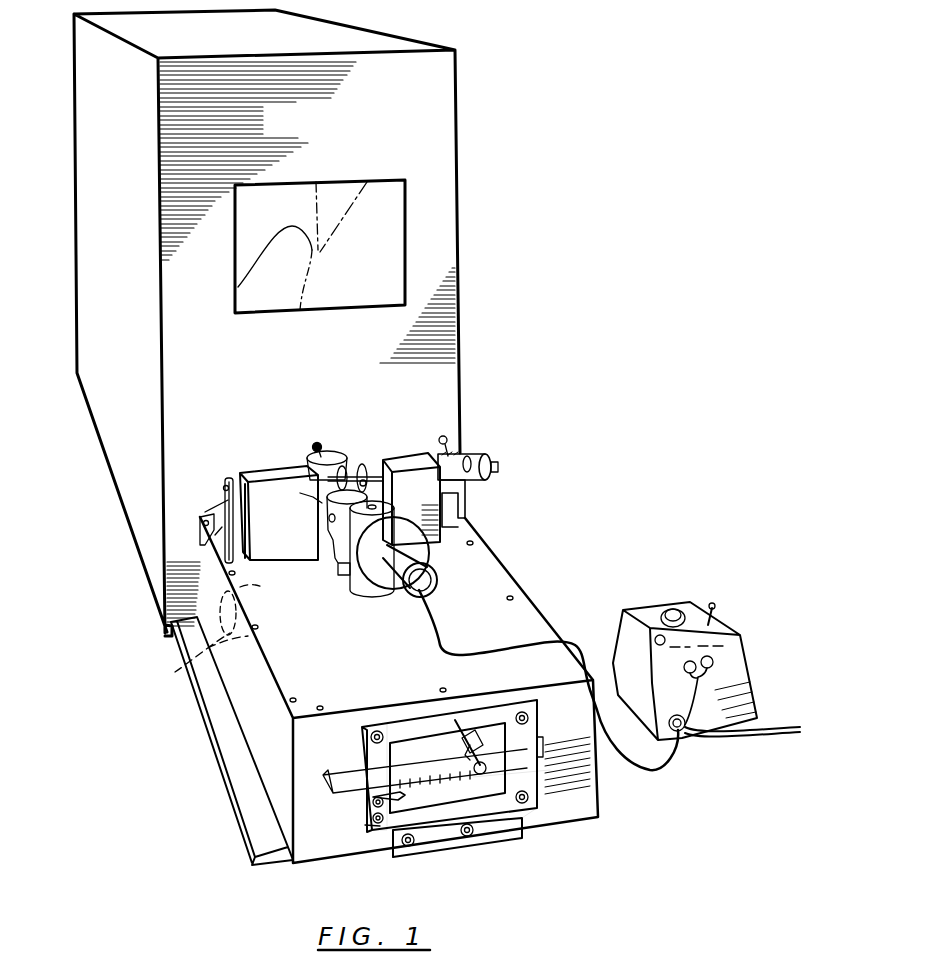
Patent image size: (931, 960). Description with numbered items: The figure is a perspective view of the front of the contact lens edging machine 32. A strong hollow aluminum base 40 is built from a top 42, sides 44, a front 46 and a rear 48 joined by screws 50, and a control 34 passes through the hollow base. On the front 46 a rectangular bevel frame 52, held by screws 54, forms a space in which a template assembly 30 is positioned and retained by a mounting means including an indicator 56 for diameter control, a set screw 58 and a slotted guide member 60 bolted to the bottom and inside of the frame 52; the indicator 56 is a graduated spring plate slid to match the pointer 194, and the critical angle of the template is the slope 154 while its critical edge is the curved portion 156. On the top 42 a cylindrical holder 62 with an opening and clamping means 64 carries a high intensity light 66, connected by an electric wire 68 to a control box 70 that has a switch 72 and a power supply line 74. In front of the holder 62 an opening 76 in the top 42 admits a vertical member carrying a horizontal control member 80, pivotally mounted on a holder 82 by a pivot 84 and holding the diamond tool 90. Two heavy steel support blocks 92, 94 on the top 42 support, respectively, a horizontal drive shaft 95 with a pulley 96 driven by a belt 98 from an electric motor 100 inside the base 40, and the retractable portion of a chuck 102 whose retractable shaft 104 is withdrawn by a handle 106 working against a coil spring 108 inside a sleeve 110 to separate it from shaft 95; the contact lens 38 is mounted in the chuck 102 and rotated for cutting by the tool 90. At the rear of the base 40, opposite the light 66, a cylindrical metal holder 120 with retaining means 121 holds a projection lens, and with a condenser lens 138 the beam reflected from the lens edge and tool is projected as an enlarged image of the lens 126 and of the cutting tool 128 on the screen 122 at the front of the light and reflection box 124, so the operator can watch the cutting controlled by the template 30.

The template assembly 30 is at (328, 795).
The machine 32 is at (287, 678).
The control 34 is at (473, 777).
The contact lens 38 is at (355, 468).
The base 40 is at (488, 560).
The top 42 is at (333, 645).
The sides 44 is at (264, 684).
The front 46 is at (337, 750).
The rear 48 is at (206, 521).
The screws 50 is at (258, 625).
The bevel frame 52 is at (541, 728).
The screws 54 is at (379, 731).
The indicator 56 is at (398, 776).
The set screw 58 is at (410, 856).
The slotted guide member 60 is at (522, 826).
The cylindrical holder 62 is at (411, 499).
The clamping means 64 is at (337, 548).
The high intensity light 66 is at (465, 523).
The electric wire 68 is at (432, 615).
The control box 70 is at (725, 665).
The switch 72 is at (713, 608).
The power supply line 74 is at (733, 742).
The opening 76 is at (362, 575).
The horizontal control member 80 is at (336, 528).
The holder 82 is at (299, 491).
The pivot 84 is at (328, 514).
The diamond tool 90 is at (365, 480).
The support block 92 is at (257, 477).
The support block 94 is at (467, 456).
The horizontal drive shaft 95 is at (228, 477).
The pulley 96 is at (205, 512).
The belt 98 is at (223, 527).
The electric motor 100 is at (178, 672).
The chuck 102 is at (494, 457).
The retractable shaft 104 is at (498, 467).
The handle 106 is at (447, 442).
The coil spring 108 is at (490, 453).
The sleeve 110 is at (470, 480).
The cylindrical metal holder 120 is at (331, 455).
The retaining means 121 is at (318, 443).
The screen 122 is at (372, 292).
The light and reflection box 124 is at (320, 133).
The image of the lens 126 is at (352, 212).
The image of the cutting tool 128 is at (261, 257).
The condenser lens 138 is at (347, 465).
The slope 154 is at (490, 712).
The curved portion 156 is at (478, 752).
The pointer 194 is at (374, 828).